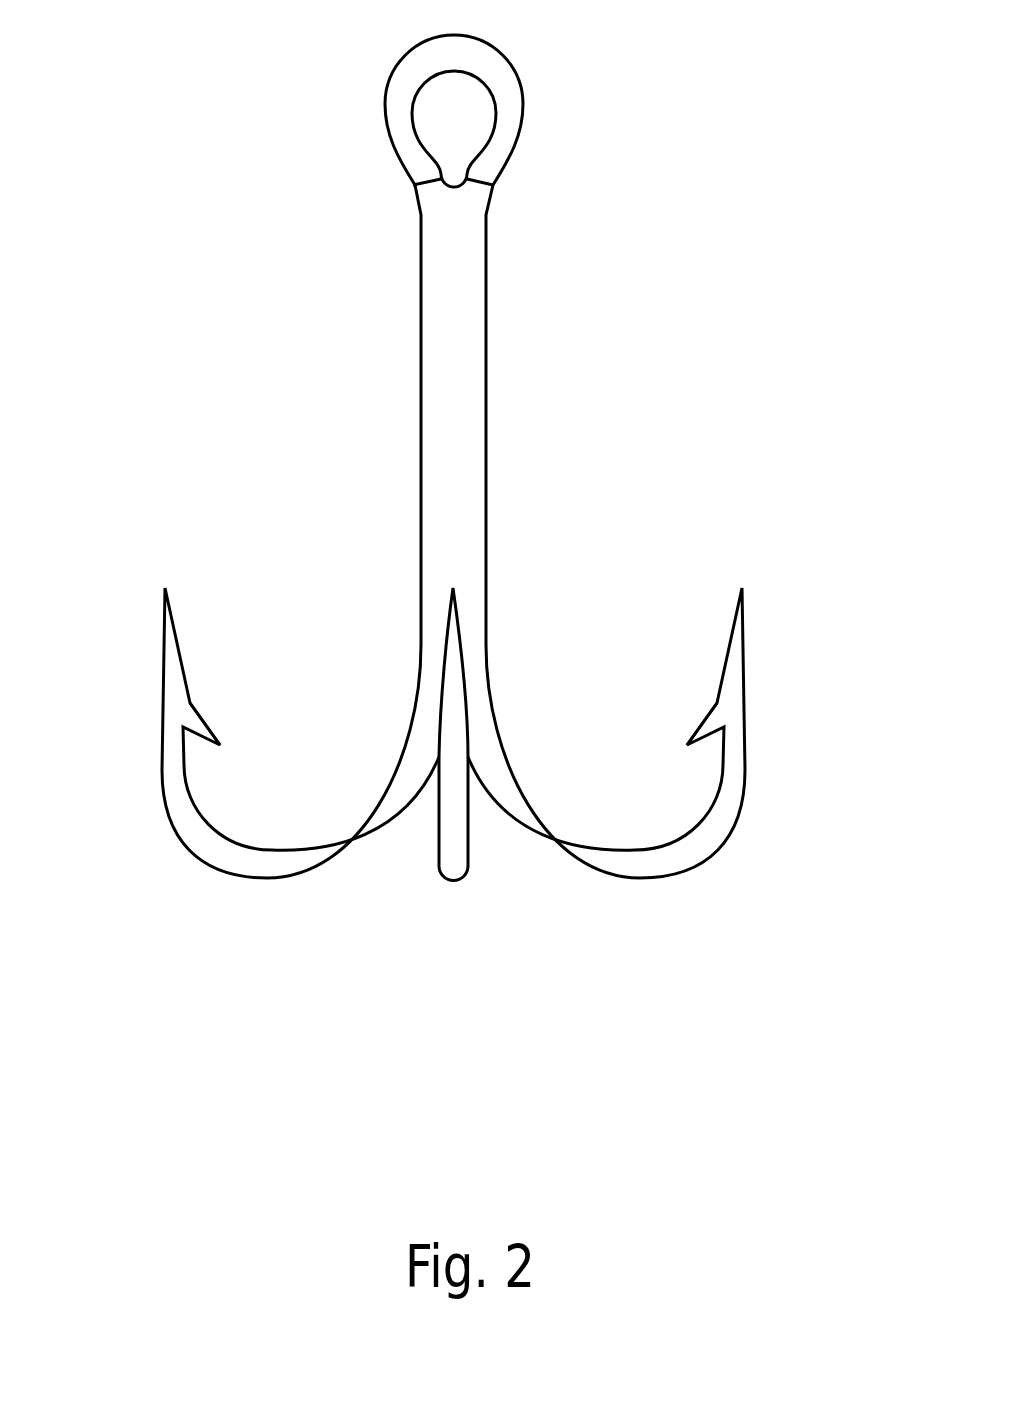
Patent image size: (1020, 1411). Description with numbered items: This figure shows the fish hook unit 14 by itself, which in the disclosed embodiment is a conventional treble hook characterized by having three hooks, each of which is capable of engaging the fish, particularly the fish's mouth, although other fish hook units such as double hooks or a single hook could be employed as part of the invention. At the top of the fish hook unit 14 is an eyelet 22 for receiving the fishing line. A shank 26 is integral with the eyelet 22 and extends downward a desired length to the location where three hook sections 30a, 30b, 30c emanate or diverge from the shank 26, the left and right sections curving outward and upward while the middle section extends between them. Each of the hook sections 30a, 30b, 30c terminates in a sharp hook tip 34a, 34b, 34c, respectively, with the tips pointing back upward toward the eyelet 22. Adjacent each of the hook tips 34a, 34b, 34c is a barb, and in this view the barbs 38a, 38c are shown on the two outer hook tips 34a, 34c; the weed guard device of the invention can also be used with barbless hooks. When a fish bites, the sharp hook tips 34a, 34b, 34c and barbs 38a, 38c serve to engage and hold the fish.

The fish hook unit 14 is at (615, 321).
The eyelet 22 is at (517, 118).
The shank 26 is at (458, 462).
The hook section 30a is at (275, 880).
The hook section 30b is at (453, 872).
The hook section 30c is at (670, 869).
The hook tip 34a is at (165, 640).
The hook tip 34b is at (455, 650).
The hook tip 34c is at (737, 652).
The barb 38a is at (208, 732).
The barb 38c is at (712, 728).